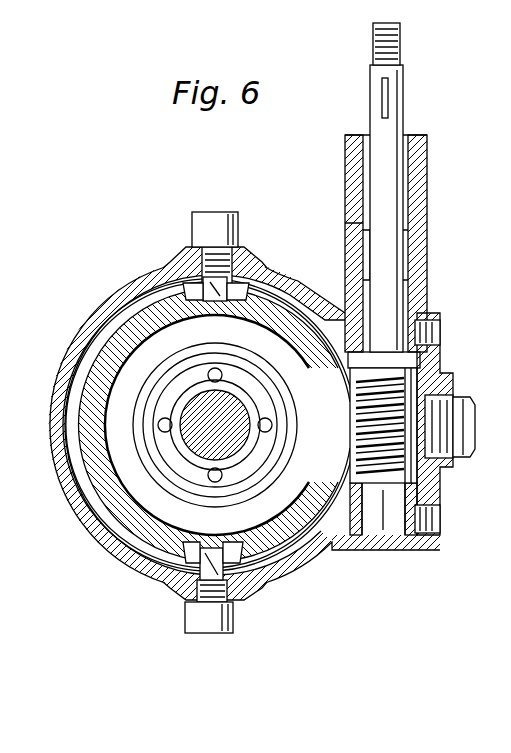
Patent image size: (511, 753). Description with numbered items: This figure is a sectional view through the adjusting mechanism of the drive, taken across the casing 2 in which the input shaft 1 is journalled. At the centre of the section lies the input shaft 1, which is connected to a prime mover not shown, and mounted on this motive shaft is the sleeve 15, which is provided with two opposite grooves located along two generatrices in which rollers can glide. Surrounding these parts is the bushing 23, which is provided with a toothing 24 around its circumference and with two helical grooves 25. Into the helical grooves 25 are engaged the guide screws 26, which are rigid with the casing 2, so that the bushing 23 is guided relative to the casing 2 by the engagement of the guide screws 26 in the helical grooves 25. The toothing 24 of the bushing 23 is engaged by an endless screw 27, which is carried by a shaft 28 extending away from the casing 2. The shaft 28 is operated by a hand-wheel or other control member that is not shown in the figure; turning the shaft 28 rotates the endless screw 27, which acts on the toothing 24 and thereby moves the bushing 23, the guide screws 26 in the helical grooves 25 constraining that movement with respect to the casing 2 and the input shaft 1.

The input shaft 1 is at (203, 410).
The casing 2 is at (83, 510).
The sleeve 15 is at (172, 363).
The bushing 23 is at (132, 525).
The toothing 24 is at (142, 545).
The helical grooves 25 is at (187, 295).
The guide screws 26 is at (232, 277).
The endless screw 27 is at (400, 392).
The shaft 28 is at (388, 211).